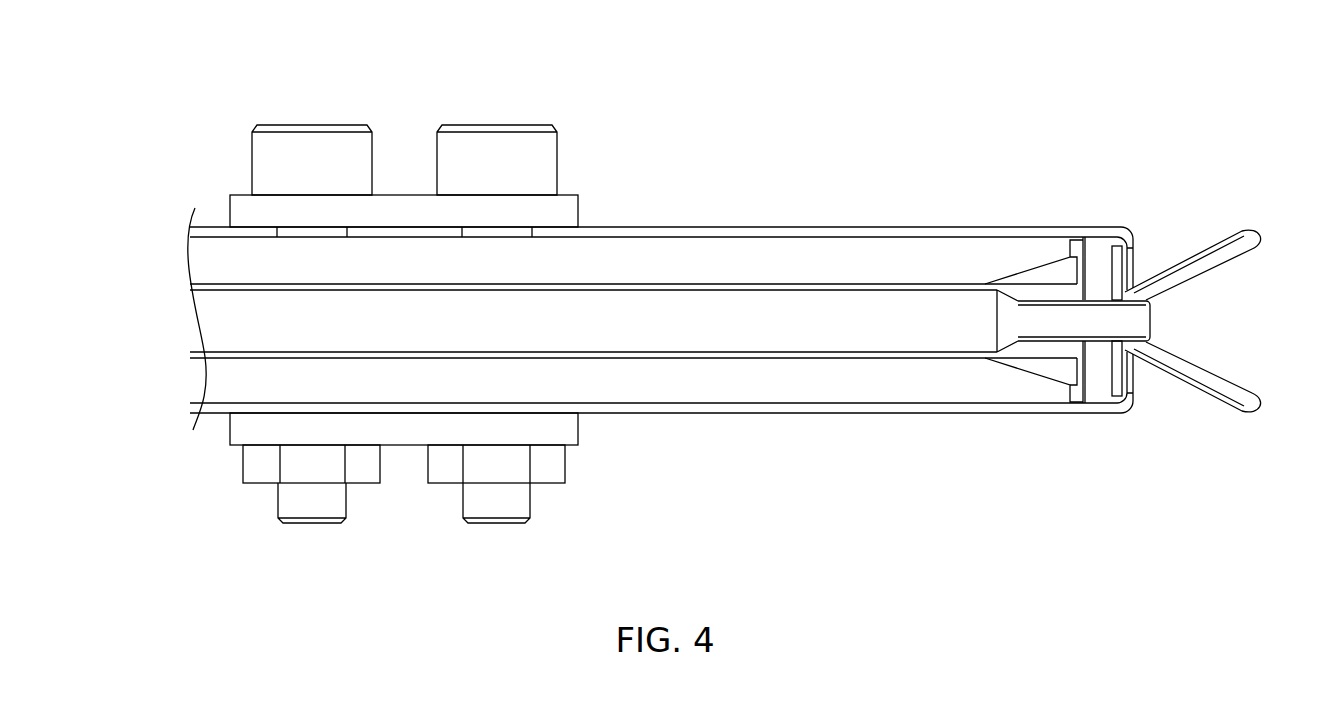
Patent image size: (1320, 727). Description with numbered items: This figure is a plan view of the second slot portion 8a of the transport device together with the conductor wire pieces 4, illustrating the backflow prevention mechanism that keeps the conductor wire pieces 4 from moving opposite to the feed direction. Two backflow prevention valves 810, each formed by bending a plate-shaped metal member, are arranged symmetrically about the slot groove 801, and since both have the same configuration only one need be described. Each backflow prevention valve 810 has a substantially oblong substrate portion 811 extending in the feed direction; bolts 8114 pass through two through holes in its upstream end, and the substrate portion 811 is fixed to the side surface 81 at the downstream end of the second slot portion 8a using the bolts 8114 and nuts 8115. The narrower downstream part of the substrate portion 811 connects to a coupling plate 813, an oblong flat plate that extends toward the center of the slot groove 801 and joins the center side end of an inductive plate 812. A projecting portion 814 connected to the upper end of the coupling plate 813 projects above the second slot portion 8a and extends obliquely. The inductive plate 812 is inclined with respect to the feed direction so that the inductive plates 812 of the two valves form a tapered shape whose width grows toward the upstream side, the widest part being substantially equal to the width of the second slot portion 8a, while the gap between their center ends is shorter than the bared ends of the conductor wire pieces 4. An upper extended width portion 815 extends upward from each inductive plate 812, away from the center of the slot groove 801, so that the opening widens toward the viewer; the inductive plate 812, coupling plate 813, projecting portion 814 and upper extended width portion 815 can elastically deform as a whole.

The conductor wire pieces 4 is at (944, 300).
The second slot portion 8a is at (683, 228).
The side surface 81 is at (212, 270).
The slot groove 801 is at (838, 292).
The backflow prevention valve 810 is at (661, 322).
The substrate portion 811 is at (642, 418).
The inductive plate 812 is at (1214, 322).
The coupling plate 813 is at (1136, 381).
The projecting portion 814 is at (1112, 366).
The upper extended width portion 815 is at (1200, 250).
The bolts 8114 is at (327, 155).
The nuts 8115 is at (318, 473).